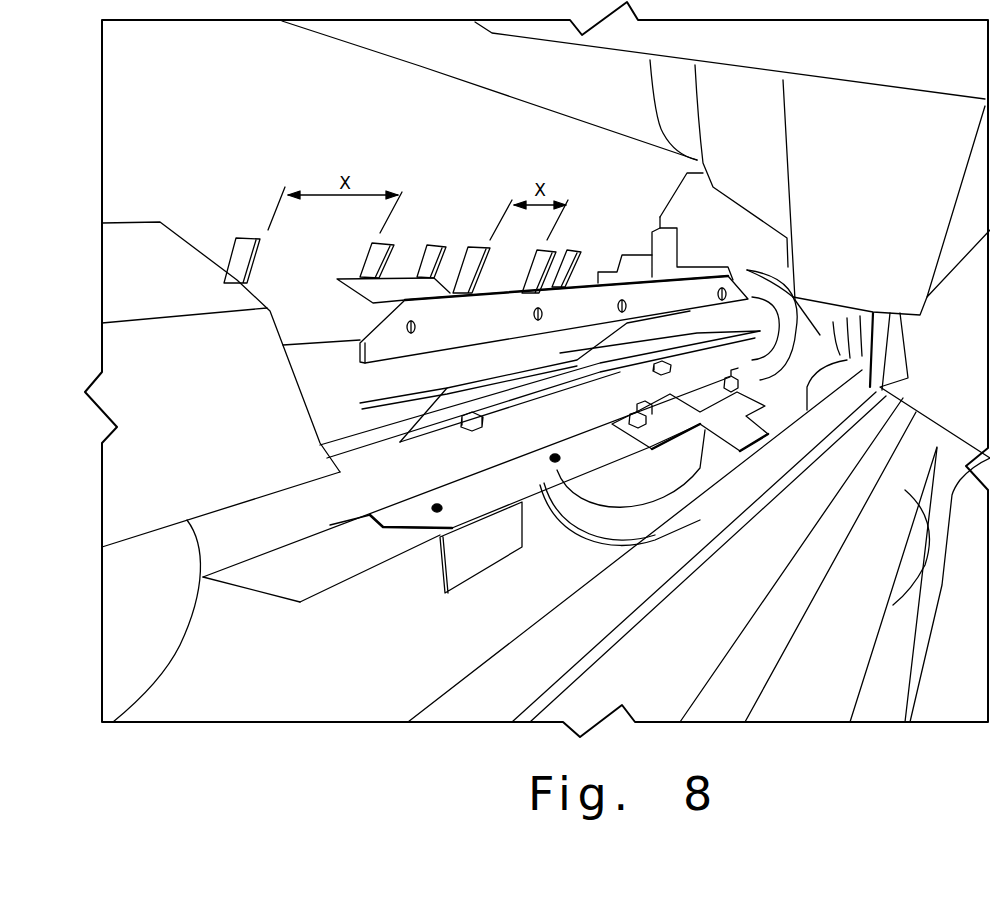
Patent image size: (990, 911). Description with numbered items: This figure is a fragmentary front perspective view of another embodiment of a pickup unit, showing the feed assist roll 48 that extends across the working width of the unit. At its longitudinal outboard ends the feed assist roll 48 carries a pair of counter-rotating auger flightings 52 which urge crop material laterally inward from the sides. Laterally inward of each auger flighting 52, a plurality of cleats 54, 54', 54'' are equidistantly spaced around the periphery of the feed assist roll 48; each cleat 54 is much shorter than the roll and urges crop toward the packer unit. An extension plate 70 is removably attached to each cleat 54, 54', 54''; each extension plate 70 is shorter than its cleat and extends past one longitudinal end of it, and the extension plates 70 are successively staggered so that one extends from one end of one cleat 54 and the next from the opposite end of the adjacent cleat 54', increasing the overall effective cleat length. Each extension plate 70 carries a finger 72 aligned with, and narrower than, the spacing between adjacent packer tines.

The feed assist roll 48 is at (293, 520).
The auger flighting 52 is at (178, 647).
The cleat 54 is at (515, 502).
The cleat 54' is at (540, 402).
The cleat 54'' is at (554, 336).
The extension plate 70 is at (367, 418).
The finger 72 is at (338, 293).